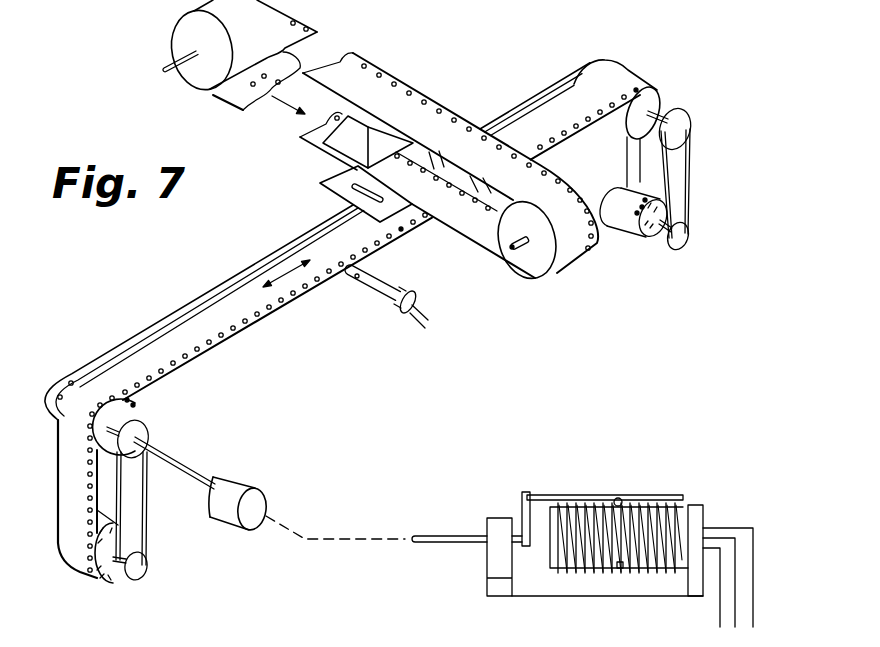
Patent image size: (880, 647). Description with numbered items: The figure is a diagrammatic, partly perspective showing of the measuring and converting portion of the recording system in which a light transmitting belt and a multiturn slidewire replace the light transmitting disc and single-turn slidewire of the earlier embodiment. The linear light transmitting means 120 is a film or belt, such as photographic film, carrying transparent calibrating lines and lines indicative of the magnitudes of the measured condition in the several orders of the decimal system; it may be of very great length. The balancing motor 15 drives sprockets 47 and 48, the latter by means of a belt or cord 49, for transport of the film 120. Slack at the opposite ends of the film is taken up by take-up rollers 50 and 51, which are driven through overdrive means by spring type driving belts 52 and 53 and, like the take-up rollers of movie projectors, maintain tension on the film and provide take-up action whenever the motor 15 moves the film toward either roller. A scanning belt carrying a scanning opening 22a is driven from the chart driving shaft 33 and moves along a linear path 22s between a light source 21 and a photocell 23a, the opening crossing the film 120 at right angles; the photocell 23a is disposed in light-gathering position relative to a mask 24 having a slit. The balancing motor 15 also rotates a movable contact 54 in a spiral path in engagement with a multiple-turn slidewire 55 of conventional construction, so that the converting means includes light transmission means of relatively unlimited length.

The linear light transmitting means 120 is at (270, 312).
The belt or cord 49 is at (173, 310).
The sprocket 48 is at (658, 97).
The spring type driving belt 53 is at (688, 168).
The take-up roller 51 is at (637, 218).
The shaft 33 is at (172, 62).
The scanning opening 22a is at (252, 86).
The path 22s is at (283, 102).
The photocell 23a is at (350, 145).
The mask 24 is at (343, 192).
The light source 21 is at (380, 282).
The sprocket 47 is at (133, 404).
The balancing motor 15 is at (240, 485).
The spring type driving belt 52 is at (147, 508).
The take-up roller 50 is at (115, 570).
The movable contact 54 is at (621, 497).
The multiple-turn slidewire 55 is at (621, 568).